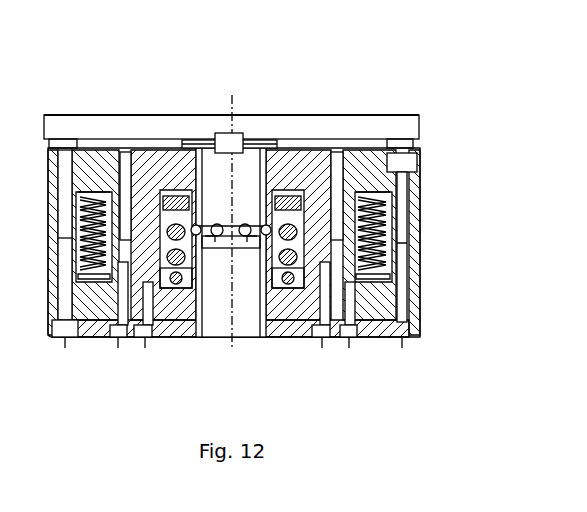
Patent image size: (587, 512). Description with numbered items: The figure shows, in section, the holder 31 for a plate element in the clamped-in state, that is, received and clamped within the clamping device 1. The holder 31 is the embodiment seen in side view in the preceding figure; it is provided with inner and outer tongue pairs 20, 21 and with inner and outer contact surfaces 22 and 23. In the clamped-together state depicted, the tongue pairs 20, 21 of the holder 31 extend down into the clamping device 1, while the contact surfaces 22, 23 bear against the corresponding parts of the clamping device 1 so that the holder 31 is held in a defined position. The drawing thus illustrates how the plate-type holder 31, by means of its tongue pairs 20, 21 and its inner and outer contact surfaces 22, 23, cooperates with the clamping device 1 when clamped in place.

The clamping device 1 is at (394, 91).
The inner tongue pair 20 is at (266, 137).
The outer tongue pair 21 is at (62, 150).
The inner contact surface 22 is at (293, 148).
The outer contact surface 23 is at (84, 148).
The holder 31 is at (128, 130).